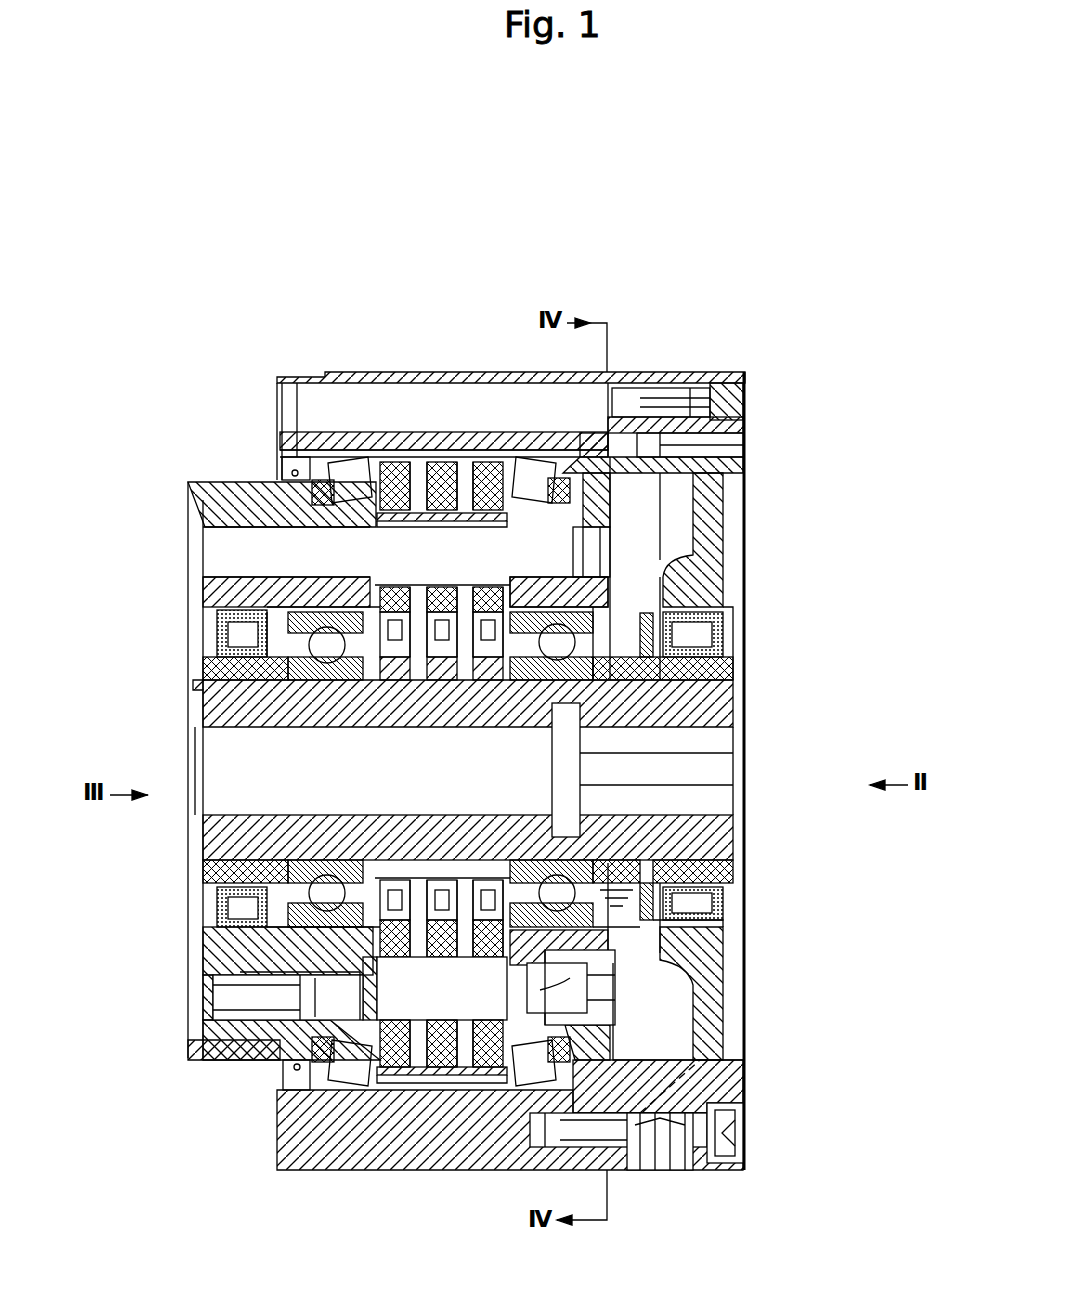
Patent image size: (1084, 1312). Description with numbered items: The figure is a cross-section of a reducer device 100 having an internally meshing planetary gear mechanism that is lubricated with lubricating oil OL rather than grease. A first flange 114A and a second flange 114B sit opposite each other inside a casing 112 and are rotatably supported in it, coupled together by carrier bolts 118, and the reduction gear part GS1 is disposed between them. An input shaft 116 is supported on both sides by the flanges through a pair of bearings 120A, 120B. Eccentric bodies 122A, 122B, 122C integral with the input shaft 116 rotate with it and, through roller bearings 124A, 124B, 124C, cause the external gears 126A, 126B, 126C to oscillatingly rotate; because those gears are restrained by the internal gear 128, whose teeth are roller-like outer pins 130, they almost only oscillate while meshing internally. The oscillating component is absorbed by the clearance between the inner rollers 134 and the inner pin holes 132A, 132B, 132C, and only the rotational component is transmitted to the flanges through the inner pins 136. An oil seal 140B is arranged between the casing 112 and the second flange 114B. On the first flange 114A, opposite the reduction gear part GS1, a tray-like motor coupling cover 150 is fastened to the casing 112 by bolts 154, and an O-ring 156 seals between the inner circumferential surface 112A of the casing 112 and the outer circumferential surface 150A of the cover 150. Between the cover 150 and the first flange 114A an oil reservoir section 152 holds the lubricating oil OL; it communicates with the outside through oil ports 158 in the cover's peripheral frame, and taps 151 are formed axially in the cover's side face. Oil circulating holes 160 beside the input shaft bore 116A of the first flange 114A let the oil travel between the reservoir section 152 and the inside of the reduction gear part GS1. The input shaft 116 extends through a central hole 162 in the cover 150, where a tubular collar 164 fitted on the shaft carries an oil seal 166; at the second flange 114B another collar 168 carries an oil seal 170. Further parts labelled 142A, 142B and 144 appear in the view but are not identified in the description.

The reducer device 100 is at (445, 275).
The casing 112 is at (297, 378).
The inner circumferential surface of the casing 112A is at (592, 437).
The first flange 114A is at (710, 507).
The second flange 114B is at (262, 495).
The input shaft 116 is at (723, 703).
The input shaft bore 116A is at (690, 705).
The carrier bolts 118 is at (507, 977).
The bearing 120A is at (583, 683).
The bearing 120B is at (321, 662).
The eccentric body 122A is at (412, 665).
The eccentric body 122B is at (435, 680).
The eccentric body 122C is at (480, 660).
The roller bearing 124A is at (390, 600).
The roller bearing 124B is at (432, 598).
The roller bearing 124C is at (482, 600).
The external gear 126A is at (392, 905).
The external gear 126B is at (432, 900).
The external gear 126C is at (480, 905).
The internal gear 128 is at (445, 1090).
The outer pins 130 is at (395, 1080).
The inner pin hole 132A is at (385, 468).
The inner pin hole 132B is at (418, 468).
The inner pin hole 132C is at (470, 465).
The inner roller 134 is at (410, 523).
The inner pin 136 is at (595, 505).
The oil seal 140B is at (282, 380).
The casing 142A is at (723, 507).
The casing 142B is at (190, 483).
The oil seal 144 is at (222, 1010).
The motor coupling cover 150 is at (707, 372).
The outer circumferential surface of the cover 150A is at (597, 437).
The taps 151 is at (712, 447).
The oil reservoir section 152 is at (648, 592).
The bolts 154 is at (737, 1147).
The O-ring 156 is at (673, 478).
The oil ports 158 is at (735, 1071).
The oil circulating holes 160 is at (595, 558).
The hole 162 is at (710, 617).
The tubular collar 164 is at (730, 673).
The oil seal 166 is at (687, 628).
The collar 168 is at (213, 712).
The oil seal 170 is at (208, 617).
The reduction gear part GS1 is at (441, 412).
The lubricating oil OL is at (633, 905).